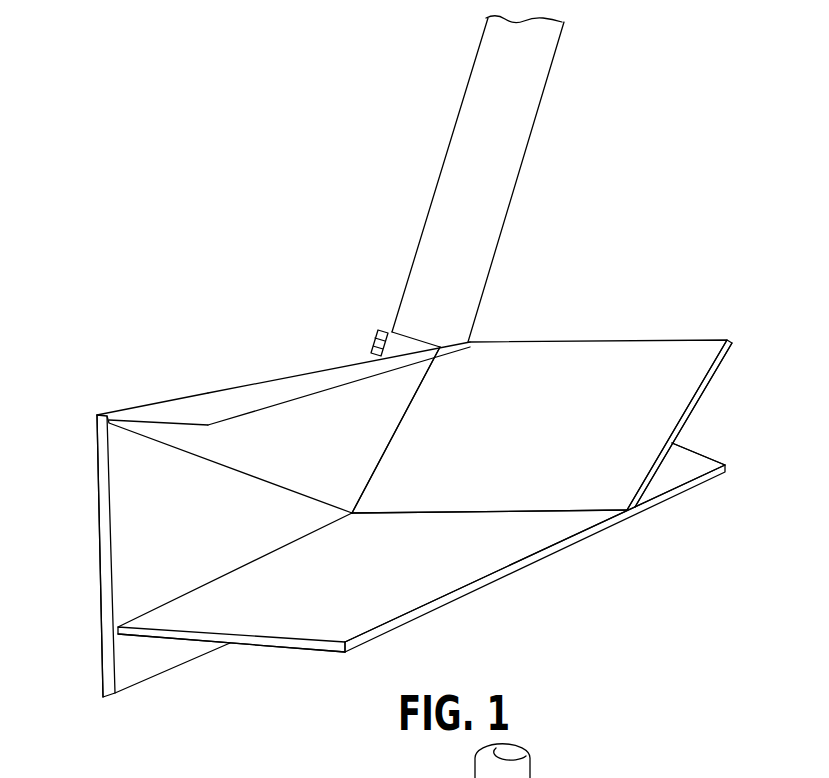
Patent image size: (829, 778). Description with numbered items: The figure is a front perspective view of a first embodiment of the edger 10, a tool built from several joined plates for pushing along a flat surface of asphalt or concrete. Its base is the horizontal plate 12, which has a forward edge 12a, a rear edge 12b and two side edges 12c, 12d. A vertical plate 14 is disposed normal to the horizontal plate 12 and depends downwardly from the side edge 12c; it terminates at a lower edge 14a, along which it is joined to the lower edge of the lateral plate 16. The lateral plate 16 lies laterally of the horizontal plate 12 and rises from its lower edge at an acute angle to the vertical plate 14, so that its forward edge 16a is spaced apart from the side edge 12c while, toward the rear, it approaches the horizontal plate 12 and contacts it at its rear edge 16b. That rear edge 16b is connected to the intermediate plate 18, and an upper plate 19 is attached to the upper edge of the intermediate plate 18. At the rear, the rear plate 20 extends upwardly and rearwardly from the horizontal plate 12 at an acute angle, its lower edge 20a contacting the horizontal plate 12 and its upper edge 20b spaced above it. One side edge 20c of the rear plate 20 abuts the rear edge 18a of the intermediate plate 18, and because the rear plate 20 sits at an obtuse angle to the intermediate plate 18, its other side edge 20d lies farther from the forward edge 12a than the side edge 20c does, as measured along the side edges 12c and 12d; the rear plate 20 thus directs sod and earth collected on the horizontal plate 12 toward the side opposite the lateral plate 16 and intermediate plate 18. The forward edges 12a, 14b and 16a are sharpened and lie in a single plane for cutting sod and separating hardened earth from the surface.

The edger 10 is at (228, 330).
The horizontal plate 12 is at (417, 593).
The forward edge of horizontal plate 12a is at (282, 648).
The rear edge of horizontal plate 12b is at (698, 452).
The side edge of horizontal plate 12c is at (287, 537).
The side edge of horizontal plate 12d is at (535, 558).
The vertical plate 14 is at (140, 660).
The lower edge of vertical plate 14a is at (120, 693).
The forward edge of vertical plate 14b is at (118, 645).
The lateral plate 16 is at (138, 508).
The forward edge of lateral plate 16a is at (100, 555).
The rear edge of lateral plate 16b is at (273, 492).
The intermediate plate 18 is at (302, 427).
The rear edge of intermediate plate 18a is at (388, 443).
The upper plate 19 is at (195, 410).
The rear plate 20 is at (573, 372).
The lower edge of rear plate 20a is at (477, 500).
The upper edge of rear plate 20b is at (683, 340).
The side edge of rear plate 20c is at (398, 400).
The side edge of rear plate 20d is at (713, 375).